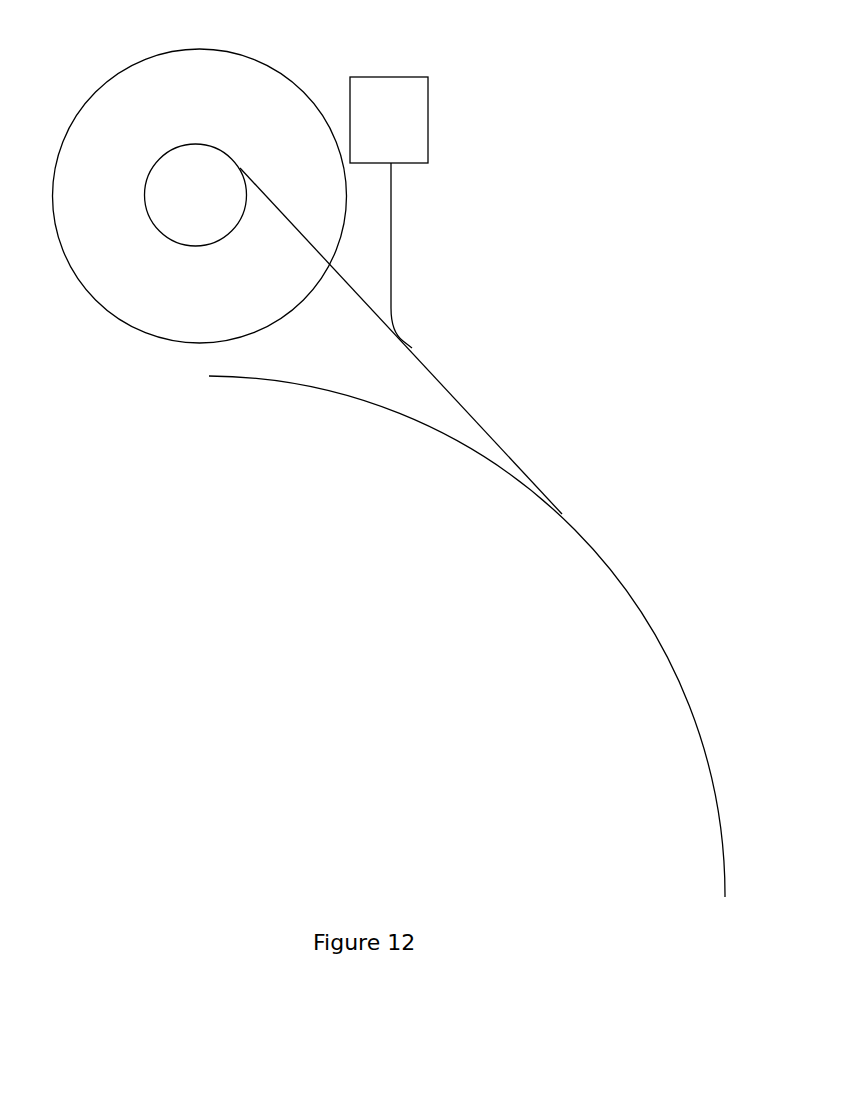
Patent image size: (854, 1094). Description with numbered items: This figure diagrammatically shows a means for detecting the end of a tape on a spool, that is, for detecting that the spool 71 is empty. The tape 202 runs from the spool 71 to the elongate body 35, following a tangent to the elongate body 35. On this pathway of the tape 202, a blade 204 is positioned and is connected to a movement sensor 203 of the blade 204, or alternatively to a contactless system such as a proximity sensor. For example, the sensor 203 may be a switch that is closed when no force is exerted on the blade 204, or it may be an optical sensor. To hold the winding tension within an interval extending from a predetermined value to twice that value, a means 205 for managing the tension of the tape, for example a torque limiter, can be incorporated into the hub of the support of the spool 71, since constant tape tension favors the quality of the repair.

The spool 71 is at (203, 63).
The means for managing the tension of the tape 205 is at (187, 220).
The movement sensor 203 is at (415, 95).
The blade 204 is at (393, 257).
The tape 202 is at (463, 403).
The elongate body 35 is at (627, 615).